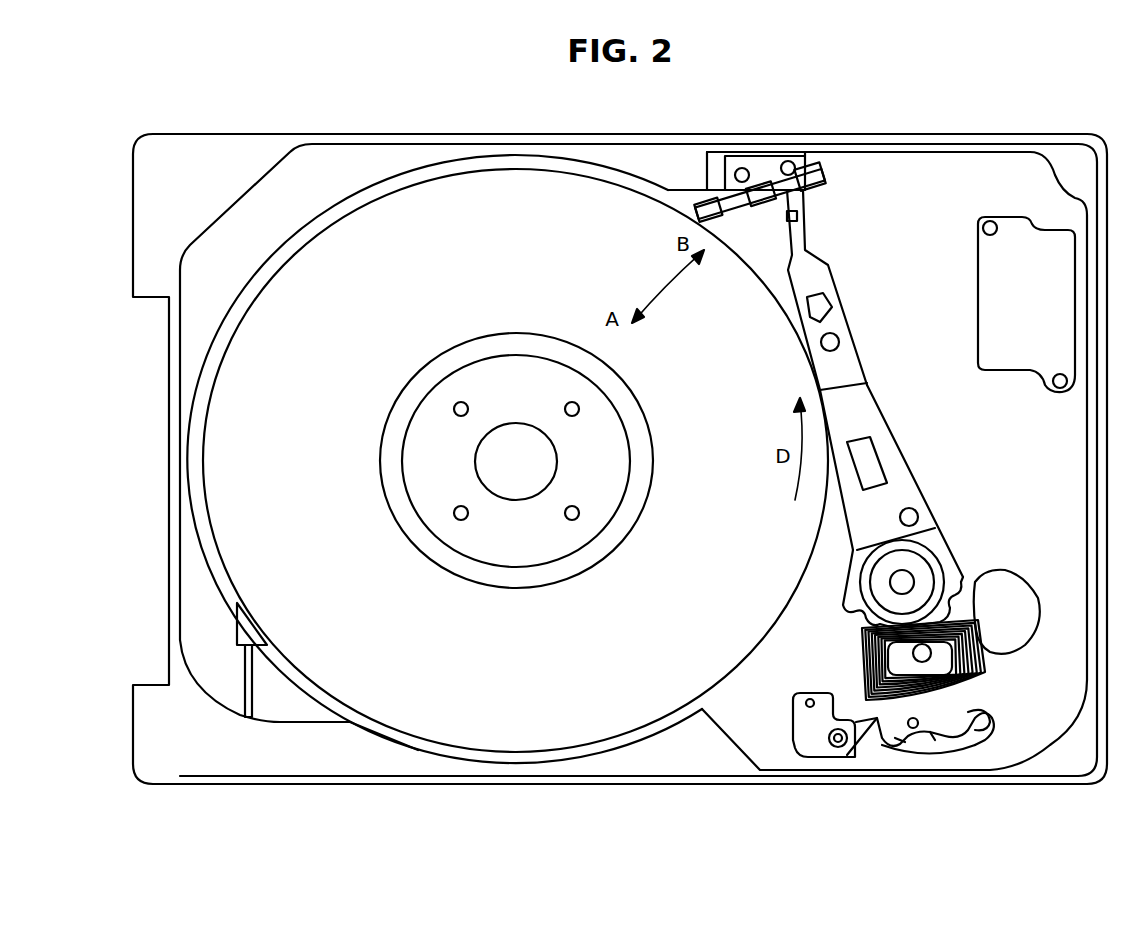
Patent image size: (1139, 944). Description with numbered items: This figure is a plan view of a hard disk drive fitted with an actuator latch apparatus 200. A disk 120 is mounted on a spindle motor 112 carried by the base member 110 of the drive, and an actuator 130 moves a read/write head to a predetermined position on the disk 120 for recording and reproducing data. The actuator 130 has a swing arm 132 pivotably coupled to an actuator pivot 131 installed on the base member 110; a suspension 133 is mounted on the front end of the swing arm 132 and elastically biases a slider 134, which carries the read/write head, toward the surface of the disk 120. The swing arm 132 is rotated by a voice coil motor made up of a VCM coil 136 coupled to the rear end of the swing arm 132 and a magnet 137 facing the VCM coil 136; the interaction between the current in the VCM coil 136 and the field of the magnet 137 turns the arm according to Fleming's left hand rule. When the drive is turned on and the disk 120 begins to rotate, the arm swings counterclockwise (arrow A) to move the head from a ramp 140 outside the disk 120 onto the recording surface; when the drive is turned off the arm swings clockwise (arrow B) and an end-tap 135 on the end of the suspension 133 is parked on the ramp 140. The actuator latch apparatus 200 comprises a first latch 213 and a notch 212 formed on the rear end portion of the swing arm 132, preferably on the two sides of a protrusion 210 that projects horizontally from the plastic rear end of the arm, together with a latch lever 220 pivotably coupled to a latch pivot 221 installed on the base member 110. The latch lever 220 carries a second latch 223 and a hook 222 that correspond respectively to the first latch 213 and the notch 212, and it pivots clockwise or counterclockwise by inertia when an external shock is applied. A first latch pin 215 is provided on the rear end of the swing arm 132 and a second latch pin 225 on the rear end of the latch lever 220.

The base member 110 is at (645, 768).
The spindle motor 112 is at (432, 429).
The disk 120 is at (481, 188).
The actuator 130 is at (949, 542).
The actuator pivot 131 is at (913, 577).
The swing arm 132 is at (882, 467).
The suspension 133 is at (805, 248).
The slider 134 is at (800, 223).
The end-tap 135 is at (788, 161).
The VCM coil 136 is at (973, 653).
The magnet 137 is at (1015, 592).
The ramp 140 is at (742, 168).
The actuator latch apparatus 200 is at (882, 766).
The protrusion 210 is at (926, 740).
The notch 212 is at (940, 738).
The first latch 213 is at (900, 745).
The first latch pin 215 is at (914, 730).
The latch lever 220 is at (870, 760).
The latch pivot 221 is at (828, 745).
The hook 222 is at (980, 727).
The second latch 223 is at (855, 750).
The second latch pin 225 is at (810, 699).